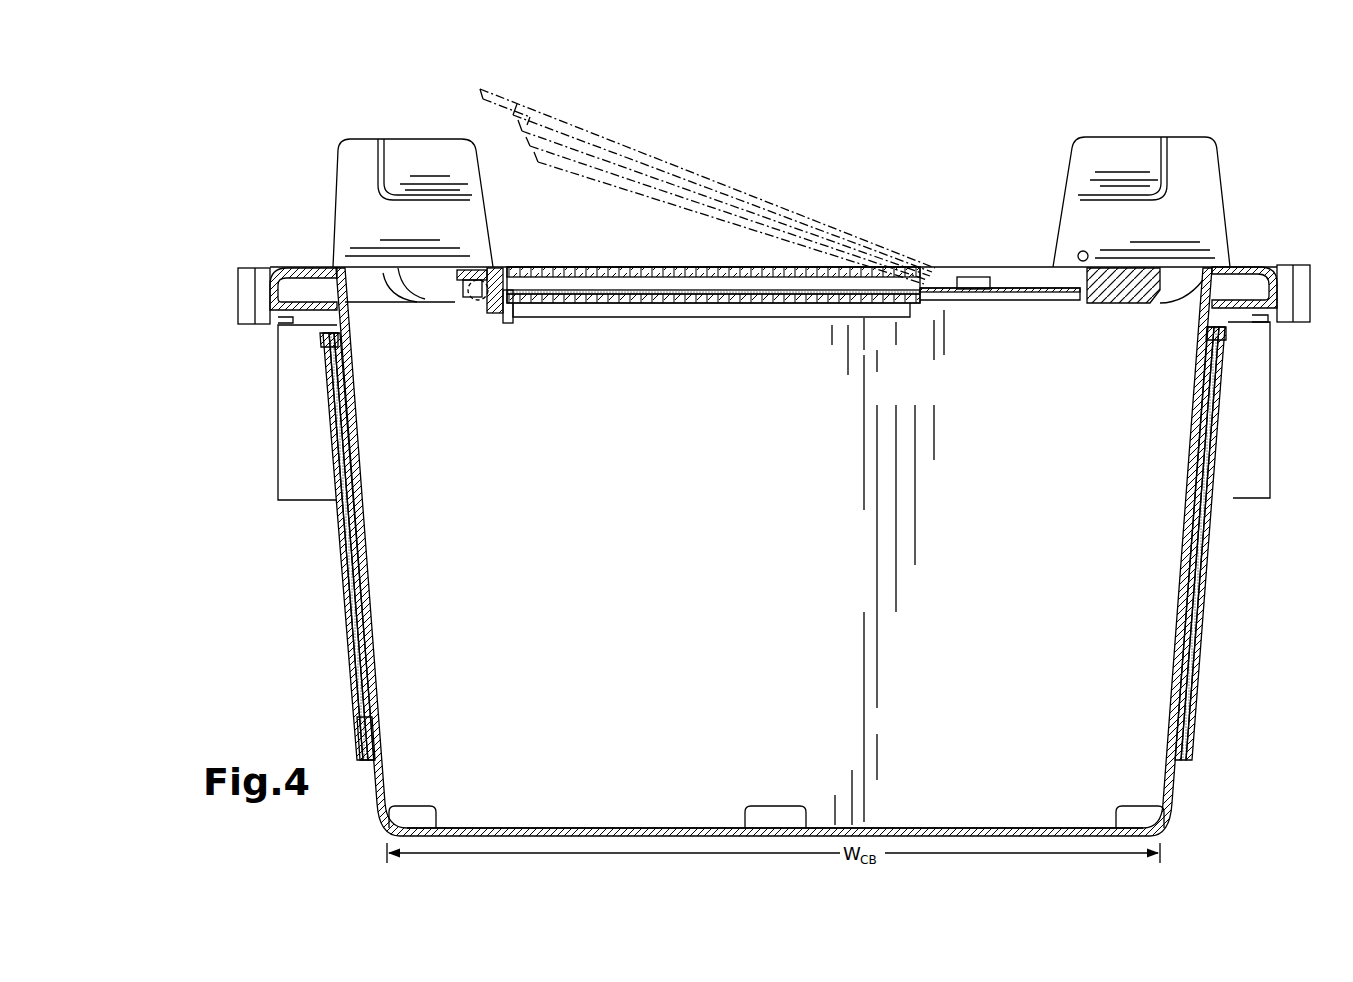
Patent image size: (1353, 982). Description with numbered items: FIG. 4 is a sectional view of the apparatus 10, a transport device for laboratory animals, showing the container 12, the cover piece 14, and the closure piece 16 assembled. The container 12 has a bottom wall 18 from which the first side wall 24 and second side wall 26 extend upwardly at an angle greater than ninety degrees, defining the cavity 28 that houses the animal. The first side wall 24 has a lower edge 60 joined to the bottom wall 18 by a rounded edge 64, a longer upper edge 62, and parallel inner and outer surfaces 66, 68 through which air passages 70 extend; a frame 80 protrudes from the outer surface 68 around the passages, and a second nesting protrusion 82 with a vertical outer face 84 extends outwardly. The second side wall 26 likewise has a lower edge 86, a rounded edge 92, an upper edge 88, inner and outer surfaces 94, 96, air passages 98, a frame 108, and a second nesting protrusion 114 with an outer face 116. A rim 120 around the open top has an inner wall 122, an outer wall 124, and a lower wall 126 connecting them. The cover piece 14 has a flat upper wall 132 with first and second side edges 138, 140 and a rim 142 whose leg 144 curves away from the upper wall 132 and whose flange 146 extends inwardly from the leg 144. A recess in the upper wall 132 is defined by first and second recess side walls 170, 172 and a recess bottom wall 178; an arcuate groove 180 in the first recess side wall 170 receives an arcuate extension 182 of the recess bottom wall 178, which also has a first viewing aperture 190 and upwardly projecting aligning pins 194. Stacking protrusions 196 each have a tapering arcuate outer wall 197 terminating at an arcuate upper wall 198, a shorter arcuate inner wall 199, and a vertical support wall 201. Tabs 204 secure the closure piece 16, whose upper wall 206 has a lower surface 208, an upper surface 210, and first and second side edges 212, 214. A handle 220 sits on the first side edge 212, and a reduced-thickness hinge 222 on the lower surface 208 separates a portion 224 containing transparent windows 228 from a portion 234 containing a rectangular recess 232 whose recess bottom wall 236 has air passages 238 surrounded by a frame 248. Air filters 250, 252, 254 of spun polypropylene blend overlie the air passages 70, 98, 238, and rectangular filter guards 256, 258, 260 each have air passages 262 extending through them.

The apparatus 10 is at (258, 128).
The container 12 is at (1182, 792).
The cover piece 14 is at (1206, 264).
The closure piece 16 is at (1021, 287).
The bottom wall 18 is at (776, 814).
The first side wall 24 is at (393, 747).
The second side wall 26 is at (1163, 723).
The cavity 28 is at (854, 567).
The lower edge 60 is at (382, 820).
The upper edge 62 is at (347, 307).
The rounded edge 64 is at (385, 835).
The inner surface 66 is at (383, 773).
The outer surface 68 is at (383, 777).
The air passages 70 is at (364, 460).
The frame 80 is at (372, 713).
The second nesting protrusion 82 is at (297, 412).
The outer face 84 is at (277, 367).
The lower edge 86 is at (1168, 808).
The upper edge 88 is at (1203, 320).
The rounded edge 92 is at (1168, 840).
The inner surface 94 is at (1165, 765).
The outer surface 96 is at (1177, 777).
The air passages 98 is at (1194, 480).
The frame 108 is at (1193, 753).
The second nesting protrusion 114 is at (1240, 437).
The outer face 116 is at (1270, 394).
The rim 120 is at (317, 298).
The inner wall 122 is at (1188, 298).
The outer wall 124 is at (1278, 270).
The lower wall 126 is at (1228, 320).
The upper wall 132 is at (350, 265).
The first side edge 138 is at (282, 268).
The second side edge 140 is at (1265, 270).
The rim 142 is at (270, 297).
The leg 144 is at (1305, 315).
The flange 146 is at (1258, 325).
The first recess side wall 170 is at (490, 228).
The second recess side wall 172 is at (1083, 252).
The recess bottom wall 178 is at (472, 302).
The arcuate groove 180 is at (420, 287).
The arcuate extension 182 is at (400, 305).
The first viewing aperture 190 is at (999, 310).
The aligning pins 194 is at (955, 262).
The stacking protrusions 196 is at (356, 137).
The arcuate outer wall 197 is at (1216, 160).
The arcuate upper wall 198 is at (1198, 133).
The arcuate inner wall 199 is at (1084, 215).
The vertical support wall 201 is at (1108, 160).
The tabs 204 is at (965, 262).
The upper wall 206 is at (935, 262).
The lower surface 208 is at (1055, 300).
The upper surface 210 is at (1052, 286).
The first side edge 212 is at (488, 313).
The second side edge 214 is at (1080, 300).
The handle 220 is at (500, 88).
The hinge 222 is at (937, 300).
The portion 224 is at (1001, 286).
The windows 228 is at (973, 300).
The rectangular recess 232 is at (570, 297).
The portion 234 is at (688, 310).
The recess bottom wall 236 is at (862, 306).
The air passages 238 is at (775, 304).
The frame 248 is at (508, 320).
The air filter 250 is at (345, 641).
The air filter 252 is at (1205, 600).
The third air filter 254 is at (592, 264).
The filter guard 256 is at (353, 745).
The filter guard 258 is at (1212, 650).
The filter guard 260 is at (722, 262).
The air passages 262 is at (643, 264).